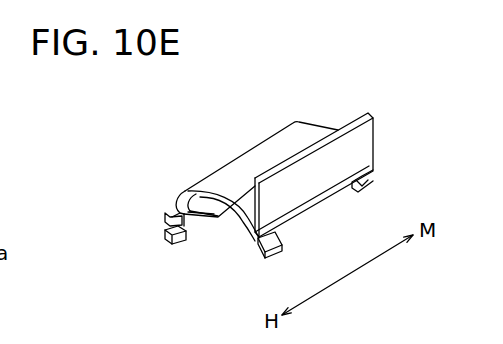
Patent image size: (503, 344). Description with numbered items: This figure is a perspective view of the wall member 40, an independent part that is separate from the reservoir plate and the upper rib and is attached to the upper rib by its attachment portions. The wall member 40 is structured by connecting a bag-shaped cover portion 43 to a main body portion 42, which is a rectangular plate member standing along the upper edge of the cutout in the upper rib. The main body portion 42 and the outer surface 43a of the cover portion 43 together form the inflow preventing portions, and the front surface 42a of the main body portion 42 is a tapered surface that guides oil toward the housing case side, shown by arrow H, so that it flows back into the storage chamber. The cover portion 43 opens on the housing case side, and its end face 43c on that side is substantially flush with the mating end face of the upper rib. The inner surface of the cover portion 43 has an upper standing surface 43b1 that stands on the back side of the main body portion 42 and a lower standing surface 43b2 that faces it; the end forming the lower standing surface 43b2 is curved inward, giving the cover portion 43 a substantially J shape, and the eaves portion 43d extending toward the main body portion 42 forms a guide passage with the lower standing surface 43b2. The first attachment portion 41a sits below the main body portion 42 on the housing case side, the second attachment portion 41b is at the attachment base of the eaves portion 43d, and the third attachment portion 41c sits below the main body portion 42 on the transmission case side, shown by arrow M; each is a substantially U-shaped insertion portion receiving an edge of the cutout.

The wall member 40 is at (388, 84).
The first attachment portion 41a is at (285, 248).
The second attachment portion 41b is at (165, 213).
The third attachment portion 41c is at (374, 176).
The main body portion 42 is at (388, 127).
The front surface 42a is at (323, 178).
The cover portion 43 is at (295, 112).
The outer surface 43a is at (265, 154).
The upper standing surface 43b1 is at (250, 227).
The lower standing surface 43b2 is at (184, 232).
The end face 43c is at (207, 183).
The eaves portion 43d is at (215, 223).